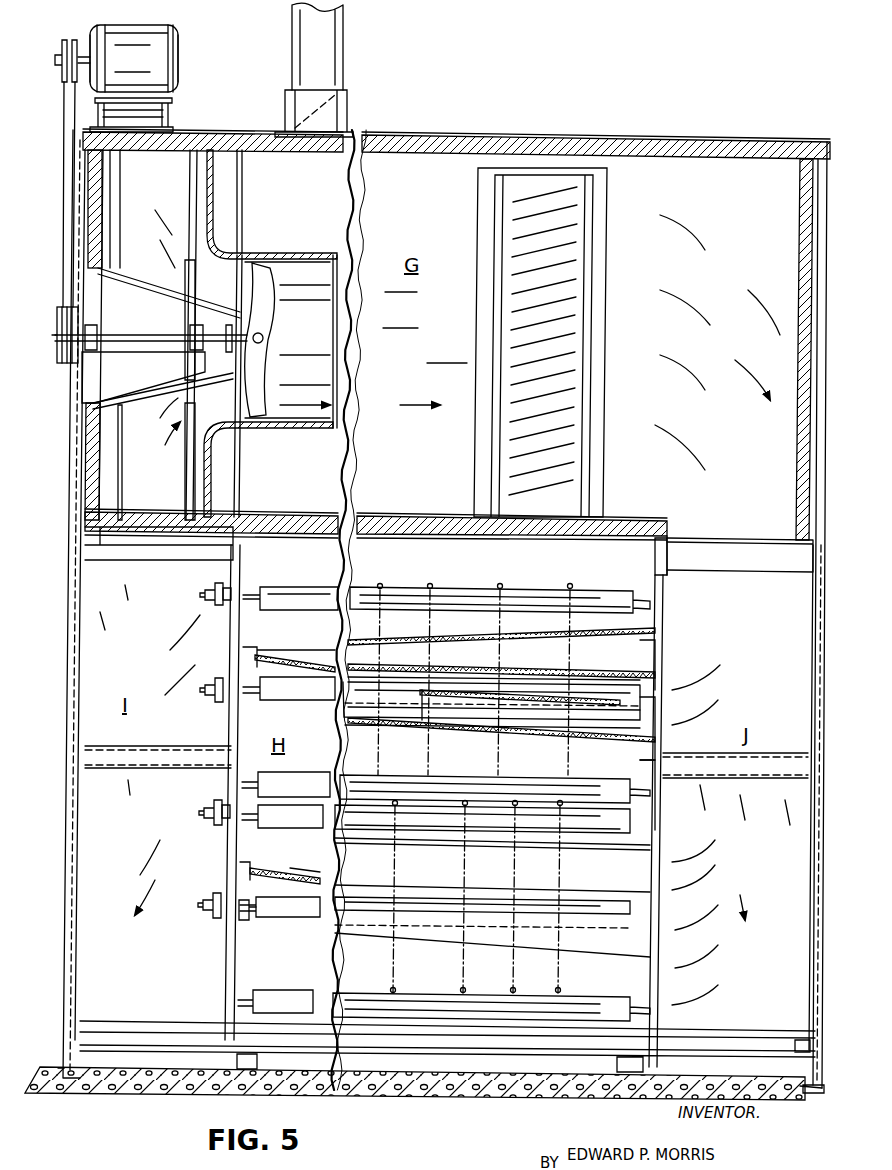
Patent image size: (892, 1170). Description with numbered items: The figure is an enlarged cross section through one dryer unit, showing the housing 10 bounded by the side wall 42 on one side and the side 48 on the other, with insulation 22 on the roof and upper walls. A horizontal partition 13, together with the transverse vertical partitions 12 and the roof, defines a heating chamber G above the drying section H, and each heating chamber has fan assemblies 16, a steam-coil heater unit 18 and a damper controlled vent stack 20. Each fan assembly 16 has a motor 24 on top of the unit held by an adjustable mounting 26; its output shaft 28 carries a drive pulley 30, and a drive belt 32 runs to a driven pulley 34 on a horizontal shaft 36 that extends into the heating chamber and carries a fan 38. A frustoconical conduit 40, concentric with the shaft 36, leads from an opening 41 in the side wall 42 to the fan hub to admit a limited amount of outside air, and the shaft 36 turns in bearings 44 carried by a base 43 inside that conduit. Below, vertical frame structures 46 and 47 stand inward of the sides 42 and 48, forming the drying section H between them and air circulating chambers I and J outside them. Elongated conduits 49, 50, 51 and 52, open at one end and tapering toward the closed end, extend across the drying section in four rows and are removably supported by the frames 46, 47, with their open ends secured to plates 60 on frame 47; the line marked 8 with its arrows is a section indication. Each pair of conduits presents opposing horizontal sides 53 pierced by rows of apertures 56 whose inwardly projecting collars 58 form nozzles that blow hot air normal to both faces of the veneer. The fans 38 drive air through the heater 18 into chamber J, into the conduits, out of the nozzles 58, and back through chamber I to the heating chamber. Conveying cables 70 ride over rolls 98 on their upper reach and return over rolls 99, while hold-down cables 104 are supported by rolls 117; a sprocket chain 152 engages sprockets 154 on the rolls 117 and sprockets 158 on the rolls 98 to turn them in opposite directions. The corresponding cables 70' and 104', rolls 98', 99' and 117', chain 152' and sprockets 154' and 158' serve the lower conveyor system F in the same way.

The spray header / tray 8 is at (380, 655).
The housing 10 is at (518, 140).
The transverse vertical partitions 12 is at (660, 158).
The horizontal partition 13 is at (614, 560).
The fan assembly 16 is at (178, 45).
The heater unit 18 is at (548, 445).
The damper controlled vent stack 20 is at (335, 62).
The insulation 22 is at (100, 190).
The motor 24 is at (116, 32).
The adjustable support means 26 is at (168, 112).
The output shaft 28 is at (82, 58).
The drive pulley 30 is at (58, 55).
The drive belt 32 is at (62, 120).
The driven pulley 34 is at (55, 320).
The horizontal shaft 36 is at (160, 335).
The fan 38 is at (268, 322).
The frustoconical conduit 40 is at (148, 296).
The opening 41 is at (80, 398).
The side wall 42 is at (78, 470).
The base 43 is at (145, 405).
The bearings 44 is at (196, 330).
The frame structure 46 is at (230, 735).
The frame structure 47 is at (664, 748).
The side 48 is at (808, 680).
The conduit 49 is at (650, 626).
The conduit 50 is at (572, 727).
The conduit 51 is at (385, 862).
The conduit 52 is at (612, 945).
The opposing horizontal sides 53 is at (586, 668).
The apertures 56 is at (505, 666).
The collars 58 is at (440, 718).
The plates 60 is at (650, 692).
The cables 70 is at (446, 740).
The conveyor roll 70' is at (491, 963).
The rolls 98 is at (496, 735).
The roll bearing 98' is at (264, 925).
The support rolls 99 is at (421, 775).
The conveyor roll 99' is at (419, 986).
The hold-down cables 104 is at (446, 669).
The spray nozzle pipe 104' is at (435, 897).
The rolls 117 is at (495, 585).
The spray manifold 117' is at (482, 836).
The driving sprocket chain 152 is at (204, 584).
The roll drive gear 152' is at (191, 801).
The sprockets 154 is at (209, 611).
The gear bracket 154' is at (195, 823).
The drive sprockets 158 is at (203, 701).
The roll drive gear 158' is at (194, 921).